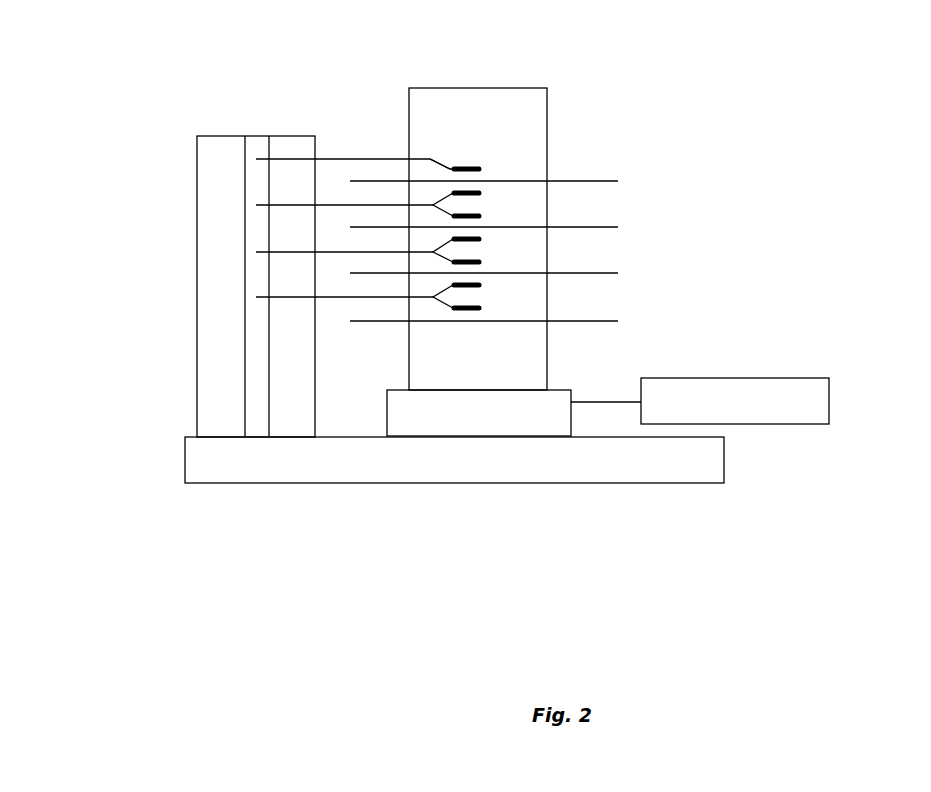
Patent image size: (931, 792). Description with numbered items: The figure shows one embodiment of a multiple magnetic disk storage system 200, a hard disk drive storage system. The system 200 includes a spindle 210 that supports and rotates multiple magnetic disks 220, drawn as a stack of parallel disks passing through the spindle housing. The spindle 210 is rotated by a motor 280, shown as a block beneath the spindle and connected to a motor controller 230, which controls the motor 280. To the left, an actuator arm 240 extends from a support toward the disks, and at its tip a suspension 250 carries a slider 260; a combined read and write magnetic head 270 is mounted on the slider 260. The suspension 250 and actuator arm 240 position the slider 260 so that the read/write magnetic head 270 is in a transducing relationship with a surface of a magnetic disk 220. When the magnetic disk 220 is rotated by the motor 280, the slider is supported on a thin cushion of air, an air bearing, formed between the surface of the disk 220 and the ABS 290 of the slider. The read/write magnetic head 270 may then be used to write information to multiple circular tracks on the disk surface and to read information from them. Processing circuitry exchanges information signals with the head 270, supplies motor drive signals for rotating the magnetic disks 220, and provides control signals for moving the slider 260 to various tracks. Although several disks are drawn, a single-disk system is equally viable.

The multiple magnetic disk storage system 200 is at (78, 558).
The spindle 210 is at (539, 88).
The magnetic disks 220 is at (583, 181).
The motor controller 230 is at (762, 377).
The actuator arm 240 is at (362, 157).
The suspension 250 is at (445, 158).
The slider 260 is at (471, 166).
The read/write magnetic head 270 is at (478, 310).
The motor 280 is at (561, 388).
The ABS 290 is at (480, 167).